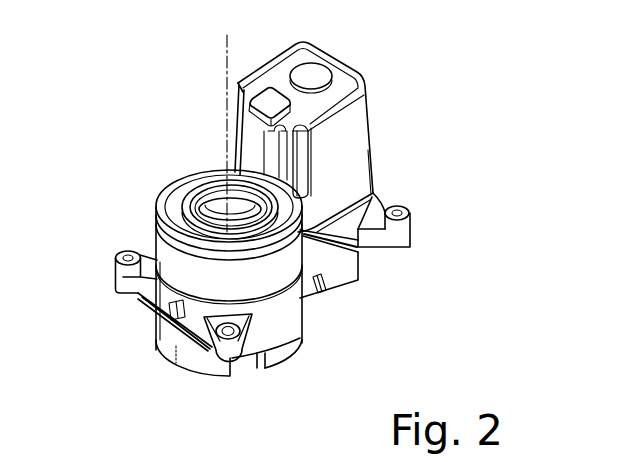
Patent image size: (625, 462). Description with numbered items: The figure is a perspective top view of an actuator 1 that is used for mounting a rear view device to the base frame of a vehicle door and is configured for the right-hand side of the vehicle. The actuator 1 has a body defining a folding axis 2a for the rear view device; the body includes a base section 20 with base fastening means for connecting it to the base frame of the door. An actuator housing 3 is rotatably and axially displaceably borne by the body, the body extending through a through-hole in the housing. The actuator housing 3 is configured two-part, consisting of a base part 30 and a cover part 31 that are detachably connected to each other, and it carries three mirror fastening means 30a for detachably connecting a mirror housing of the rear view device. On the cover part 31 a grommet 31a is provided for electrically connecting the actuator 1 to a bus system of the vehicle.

The actuator 1 is at (146, 191).
The folding axis 2a is at (226, 63).
The actuator housing 3 is at (501, 82).
The base section 20 is at (288, 342).
The base part 30 is at (305, 308).
The mirror fastening means 30a is at (126, 302).
The cover part 31 is at (311, 137).
The grommet 31a is at (250, 101).